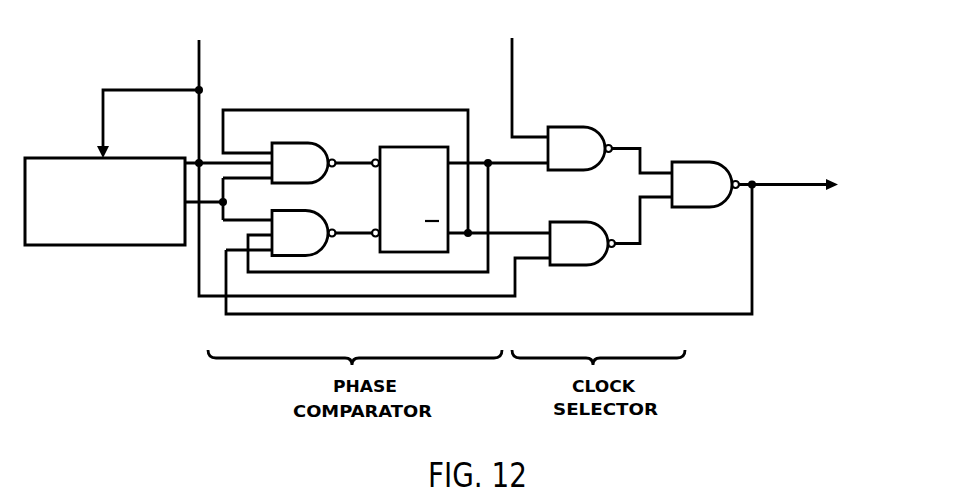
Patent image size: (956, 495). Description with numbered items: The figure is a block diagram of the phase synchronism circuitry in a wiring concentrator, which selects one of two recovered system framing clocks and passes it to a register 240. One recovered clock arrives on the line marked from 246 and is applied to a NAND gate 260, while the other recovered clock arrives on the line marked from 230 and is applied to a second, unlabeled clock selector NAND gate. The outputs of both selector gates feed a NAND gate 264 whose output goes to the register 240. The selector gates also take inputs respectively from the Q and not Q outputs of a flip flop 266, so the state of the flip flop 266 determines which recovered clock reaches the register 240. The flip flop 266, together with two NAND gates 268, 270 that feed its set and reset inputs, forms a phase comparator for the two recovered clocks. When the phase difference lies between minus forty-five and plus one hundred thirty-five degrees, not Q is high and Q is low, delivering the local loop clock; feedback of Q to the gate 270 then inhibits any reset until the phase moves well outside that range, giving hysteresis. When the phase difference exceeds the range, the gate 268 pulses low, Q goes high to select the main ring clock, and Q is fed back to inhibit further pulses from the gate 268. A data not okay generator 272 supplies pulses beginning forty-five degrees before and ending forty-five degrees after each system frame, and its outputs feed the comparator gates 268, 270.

The signal source 230 (FROM 230) 230 is at (323, 158).
The signal source 246 (FROM 246) 246 is at (521, 77).
The register 240 is at (803, 200).
The data not okay generator 272 is at (100, 248).
The NAND gate 268 is at (318, 133).
The NAND gate 270 is at (312, 217).
The flip flop 266 is at (404, 147).
The NAND gate 260 is at (577, 126).
The NAND gate 264 is at (688, 160).